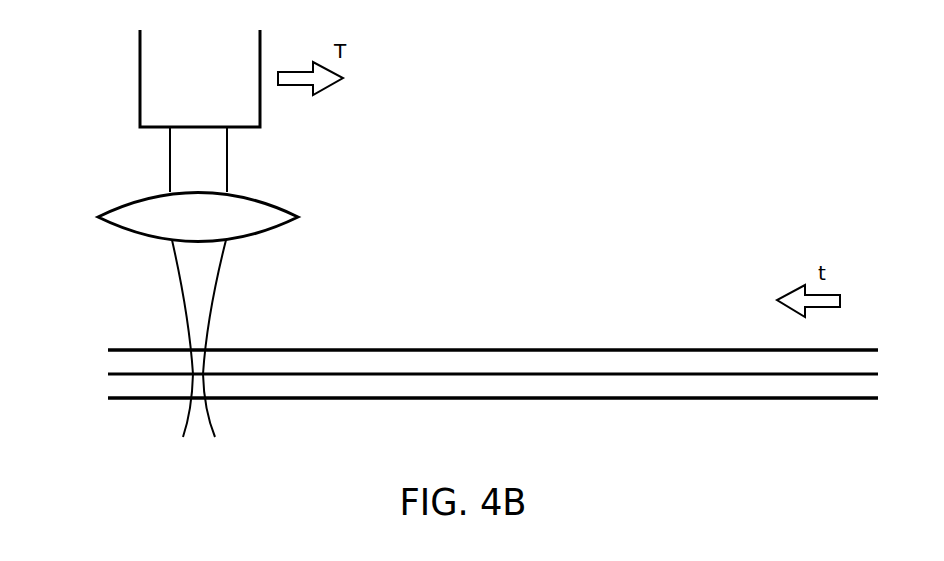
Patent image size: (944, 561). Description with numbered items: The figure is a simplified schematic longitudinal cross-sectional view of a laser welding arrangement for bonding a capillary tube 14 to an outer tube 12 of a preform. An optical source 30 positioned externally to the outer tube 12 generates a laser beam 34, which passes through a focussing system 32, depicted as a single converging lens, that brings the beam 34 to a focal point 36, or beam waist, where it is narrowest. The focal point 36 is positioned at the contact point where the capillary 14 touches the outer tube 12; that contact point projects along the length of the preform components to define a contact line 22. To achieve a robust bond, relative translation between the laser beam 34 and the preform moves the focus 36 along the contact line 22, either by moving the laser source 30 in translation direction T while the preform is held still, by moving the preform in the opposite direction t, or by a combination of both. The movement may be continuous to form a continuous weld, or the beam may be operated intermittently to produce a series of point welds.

The optical source 30 is at (183, 92).
The laser beam 34 is at (170, 172).
The focussing system 32 is at (298, 216).
The focal point 36 is at (207, 375).
The contact line 22 is at (108, 373).
The outer tube 12 is at (850, 362).
The capillary tube 14 is at (850, 387).